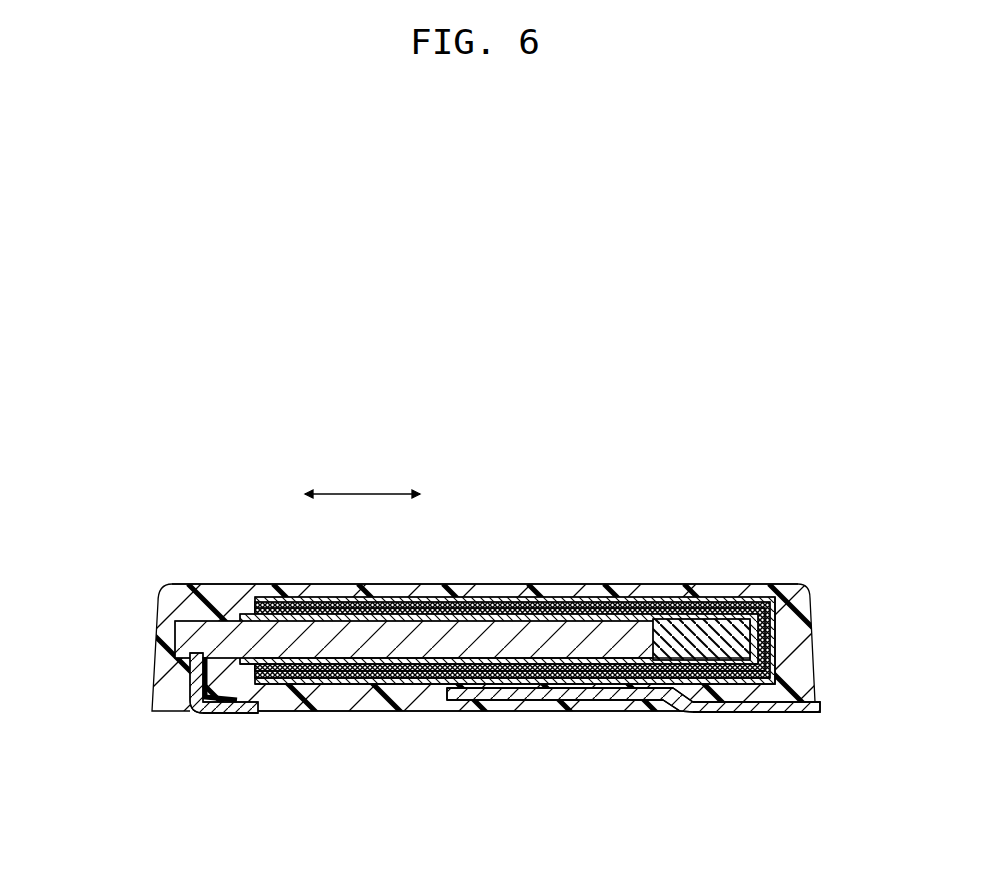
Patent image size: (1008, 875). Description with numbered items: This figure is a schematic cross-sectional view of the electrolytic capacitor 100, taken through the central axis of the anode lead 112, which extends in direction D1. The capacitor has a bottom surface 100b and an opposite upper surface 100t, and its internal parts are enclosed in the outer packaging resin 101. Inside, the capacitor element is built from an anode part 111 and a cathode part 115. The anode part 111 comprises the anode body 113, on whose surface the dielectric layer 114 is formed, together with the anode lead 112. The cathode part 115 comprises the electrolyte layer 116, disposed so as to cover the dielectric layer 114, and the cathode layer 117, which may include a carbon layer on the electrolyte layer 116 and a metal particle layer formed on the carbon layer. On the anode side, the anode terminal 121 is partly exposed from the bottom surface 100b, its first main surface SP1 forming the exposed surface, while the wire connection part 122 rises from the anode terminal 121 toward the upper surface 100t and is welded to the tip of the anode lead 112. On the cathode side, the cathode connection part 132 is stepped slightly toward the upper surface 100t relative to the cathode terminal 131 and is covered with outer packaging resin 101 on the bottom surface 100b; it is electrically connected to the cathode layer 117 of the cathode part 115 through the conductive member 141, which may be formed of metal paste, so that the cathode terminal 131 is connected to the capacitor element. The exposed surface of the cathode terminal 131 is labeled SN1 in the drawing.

The electrolytic capacitor 100 is at (466, 622).
The upper surface 100t is at (280, 581).
The bottom surface 100b is at (675, 717).
The outer packaging resin 101 is at (217, 583).
The anode part 111 is at (475, 593).
The anode lead 112 is at (585, 538).
The anode body 113 is at (488, 608).
The dielectric layer 114 is at (547, 599).
The cathode part 115 is at (507, 692).
The electrolyte layer 116 is at (307, 687).
The cathode layer 117 is at (358, 686).
The anode terminal 121 is at (220, 713).
The wire connection part 122 is at (192, 674).
The cathode terminal 131 is at (748, 713).
The cathode connection part 132 is at (575, 698).
The conductive member 141 is at (512, 697).
The direction in which anode lead extends D1 is at (362, 480).
The first main surface SP1 is at (236, 716).
The negative terminal surface SN1 is at (773, 714).